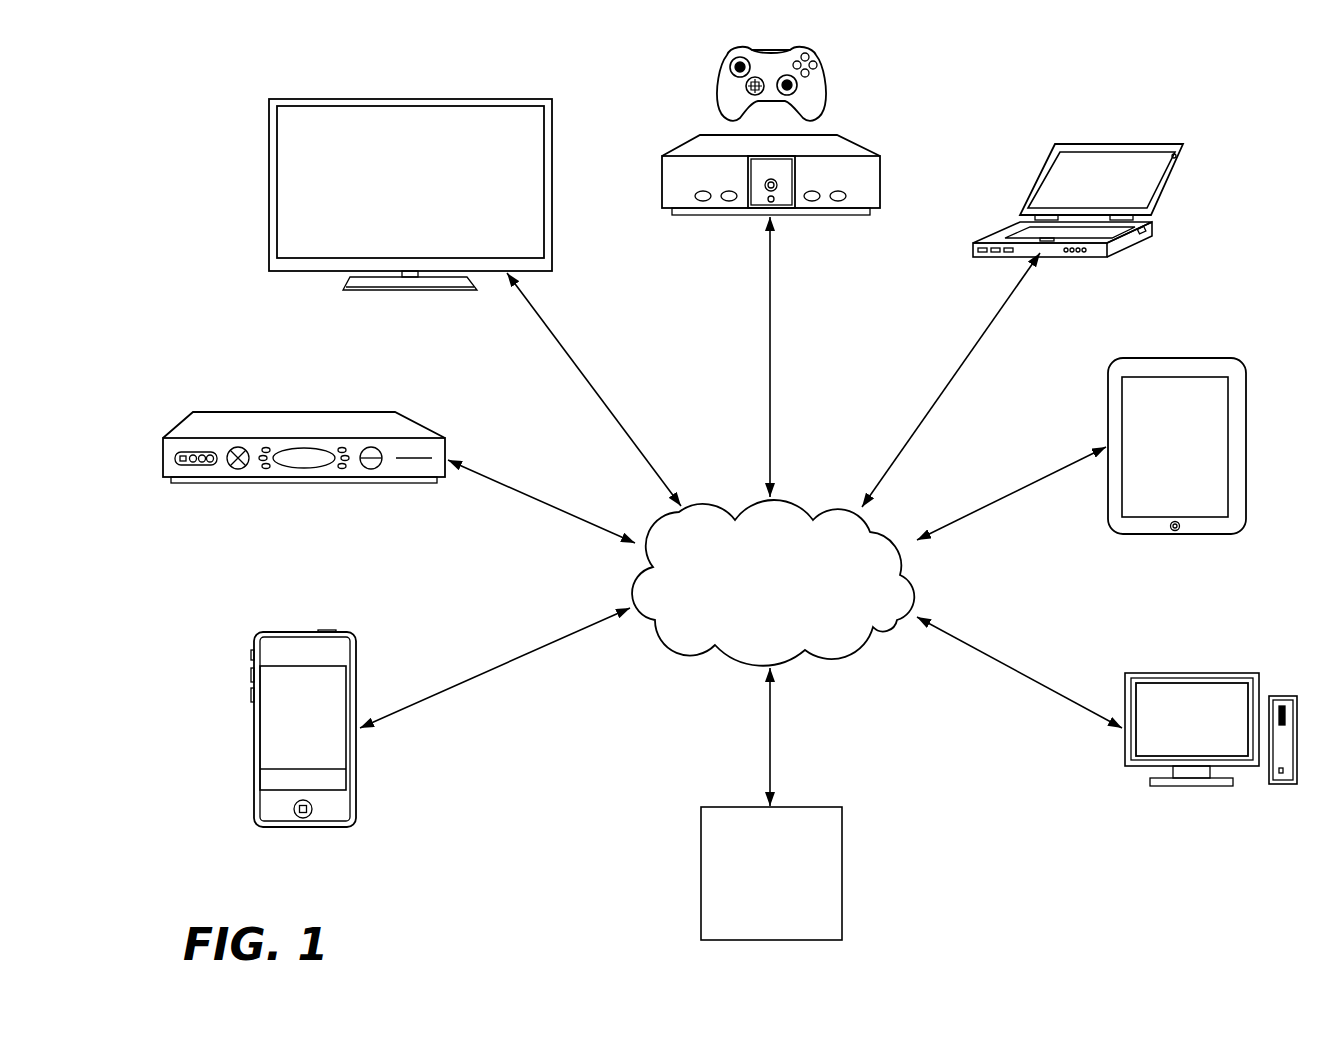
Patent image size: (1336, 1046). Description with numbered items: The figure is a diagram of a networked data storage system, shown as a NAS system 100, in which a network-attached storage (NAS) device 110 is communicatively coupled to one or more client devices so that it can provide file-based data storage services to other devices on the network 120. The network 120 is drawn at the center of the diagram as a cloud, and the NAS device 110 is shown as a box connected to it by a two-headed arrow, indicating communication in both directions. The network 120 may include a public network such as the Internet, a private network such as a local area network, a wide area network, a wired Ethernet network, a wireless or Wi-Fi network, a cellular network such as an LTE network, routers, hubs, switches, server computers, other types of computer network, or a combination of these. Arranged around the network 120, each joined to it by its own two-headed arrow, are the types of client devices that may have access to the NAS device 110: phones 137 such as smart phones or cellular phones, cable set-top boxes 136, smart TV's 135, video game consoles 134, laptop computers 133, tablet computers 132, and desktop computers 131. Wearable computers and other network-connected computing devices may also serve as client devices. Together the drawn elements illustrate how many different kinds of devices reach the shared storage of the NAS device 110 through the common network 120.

The NAS system 100 is at (150, 123).
The network-attached storage device 110 is at (843, 873).
The network 120 is at (790, 592).
The desktop computer 131 is at (1193, 672).
The tablet computer 132 is at (1175, 357).
The laptop computer 133 is at (1122, 143).
The video game console 134 is at (857, 144).
The smart TV 135 is at (412, 99).
The cable set-top box 136 is at (313, 412).
The phone 137 is at (303, 632).